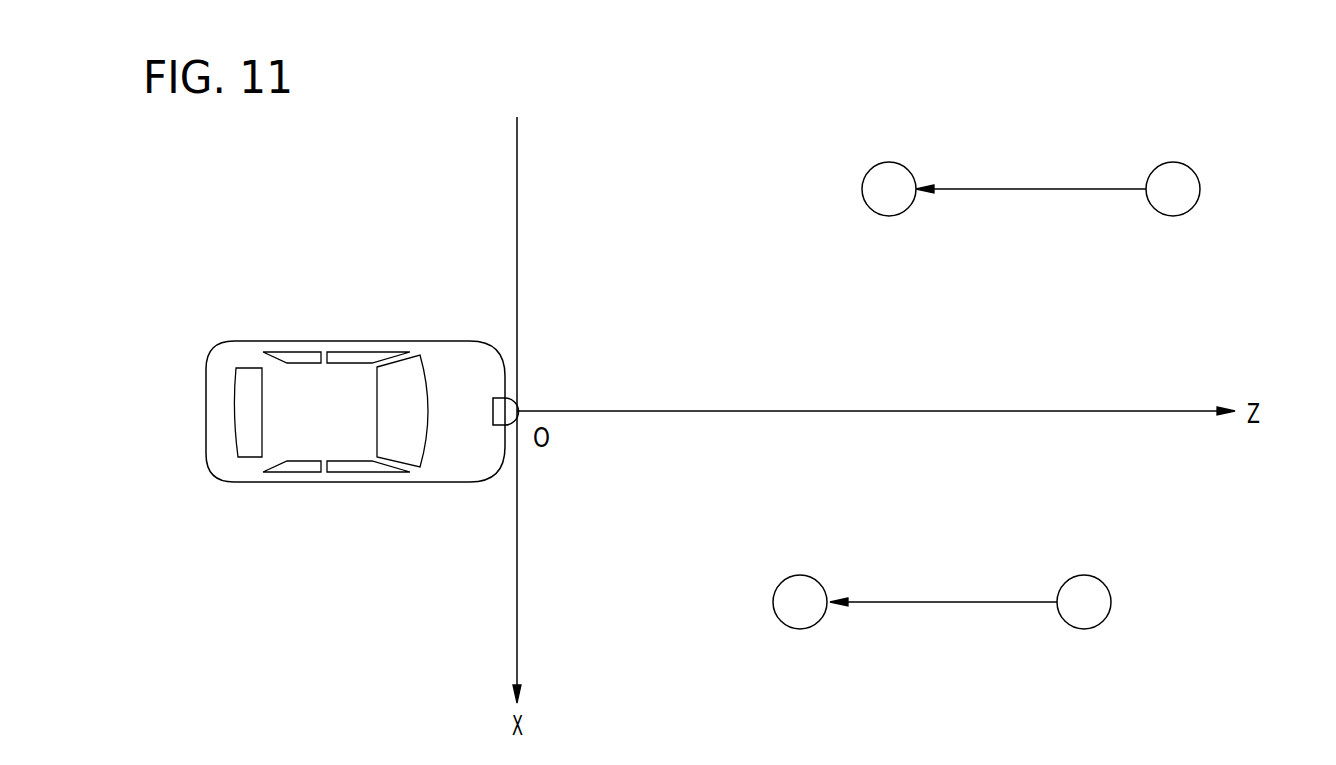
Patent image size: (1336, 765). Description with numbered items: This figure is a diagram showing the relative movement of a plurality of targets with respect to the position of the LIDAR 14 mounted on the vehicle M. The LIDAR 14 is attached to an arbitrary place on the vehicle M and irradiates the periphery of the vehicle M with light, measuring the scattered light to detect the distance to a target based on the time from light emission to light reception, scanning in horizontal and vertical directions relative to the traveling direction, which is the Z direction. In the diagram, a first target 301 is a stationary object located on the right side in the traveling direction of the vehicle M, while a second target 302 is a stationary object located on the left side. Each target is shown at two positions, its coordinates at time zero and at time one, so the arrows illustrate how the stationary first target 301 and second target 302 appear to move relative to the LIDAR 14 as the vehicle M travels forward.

The vehicle M is at (355, 341).
The LIDAR 14 is at (520, 409).
The first target 301 is at (800, 575).
The second target 302 is at (889, 162).